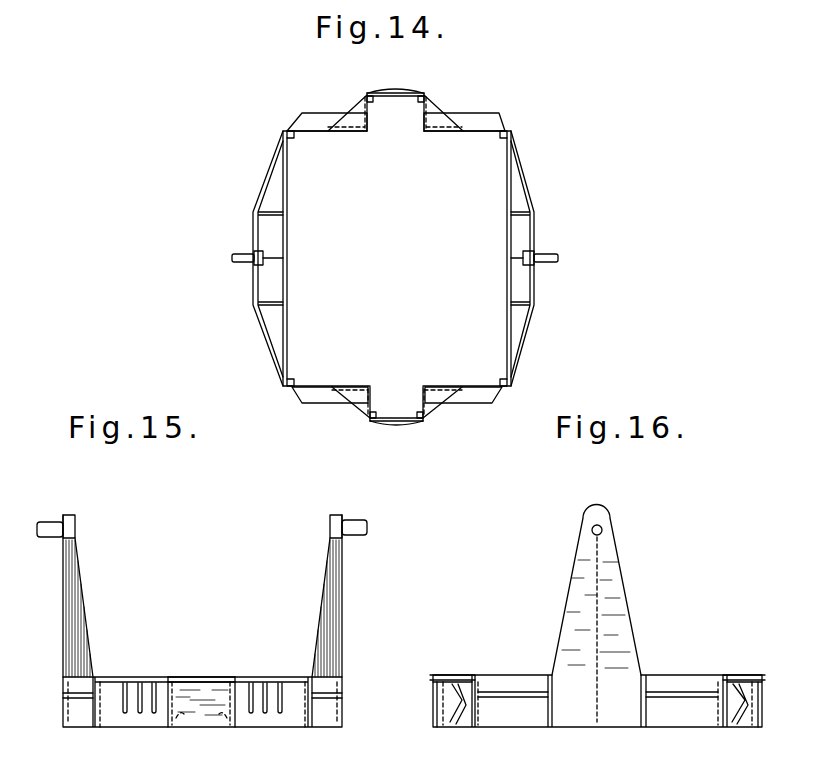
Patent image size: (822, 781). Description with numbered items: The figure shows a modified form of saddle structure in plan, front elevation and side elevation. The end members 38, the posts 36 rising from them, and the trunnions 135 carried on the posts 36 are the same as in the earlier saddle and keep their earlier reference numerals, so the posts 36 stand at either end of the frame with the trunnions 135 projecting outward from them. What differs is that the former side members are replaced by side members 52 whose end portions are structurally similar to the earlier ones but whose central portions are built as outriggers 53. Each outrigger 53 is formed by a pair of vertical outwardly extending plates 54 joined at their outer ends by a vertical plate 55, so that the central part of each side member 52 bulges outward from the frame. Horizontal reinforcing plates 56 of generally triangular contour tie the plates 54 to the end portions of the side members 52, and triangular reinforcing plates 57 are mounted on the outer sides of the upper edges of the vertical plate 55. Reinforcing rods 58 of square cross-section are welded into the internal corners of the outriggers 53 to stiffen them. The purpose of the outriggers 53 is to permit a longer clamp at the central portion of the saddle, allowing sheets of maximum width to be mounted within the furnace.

In FIG. 14, the post 36 is at (254, 277).
In FIG. 15, the post 36 is at (76, 613).
In FIG. 16, the post 36 is at (614, 598).
In FIG. 14, the end member 38 is at (283, 332).
In FIG. 15, the end member 38 is at (92, 705).
In FIG. 16, the end member 38 is at (530, 717).
In FIG. 14, the side member 52 is at (321, 117).
In FIG. 16, the side member 52 is at (458, 700).
In FIG. 14, the outrigger 53 is at (414, 88).
In FIG. 14, the vertical outwardly extending plate 54 is at (416, 123).
In FIG. 15, the vertical outwardly extending plate 54 is at (183, 713).
In FIG. 16, the vertical outwardly extending plate 54 is at (443, 674).
In FIG. 14, the vertical plate 55 is at (392, 97).
In FIG. 15, the vertical plate 55 is at (209, 720).
In FIG. 16, the vertical plate 55 is at (435, 708).
In FIG. 14, the horizontal reinforcing plate 56 is at (348, 112).
In FIG. 16, the horizontal reinforcing plate 56 is at (747, 670).
In FIG. 14, the triangular reinforcing plate 57 is at (394, 88).
In FIG. 15, the triangular reinforcing plate 57 is at (205, 678).
In FIG. 16, the triangular reinforcing plate 57 is at (432, 680).
In FIG. 14, the reinforcing rod 58 is at (365, 111).
In FIG. 14, the trunnion 135 is at (236, 254).
In FIG. 15, the trunnion 135 is at (62, 519).
In FIG. 16, the trunnion 135 is at (603, 531).